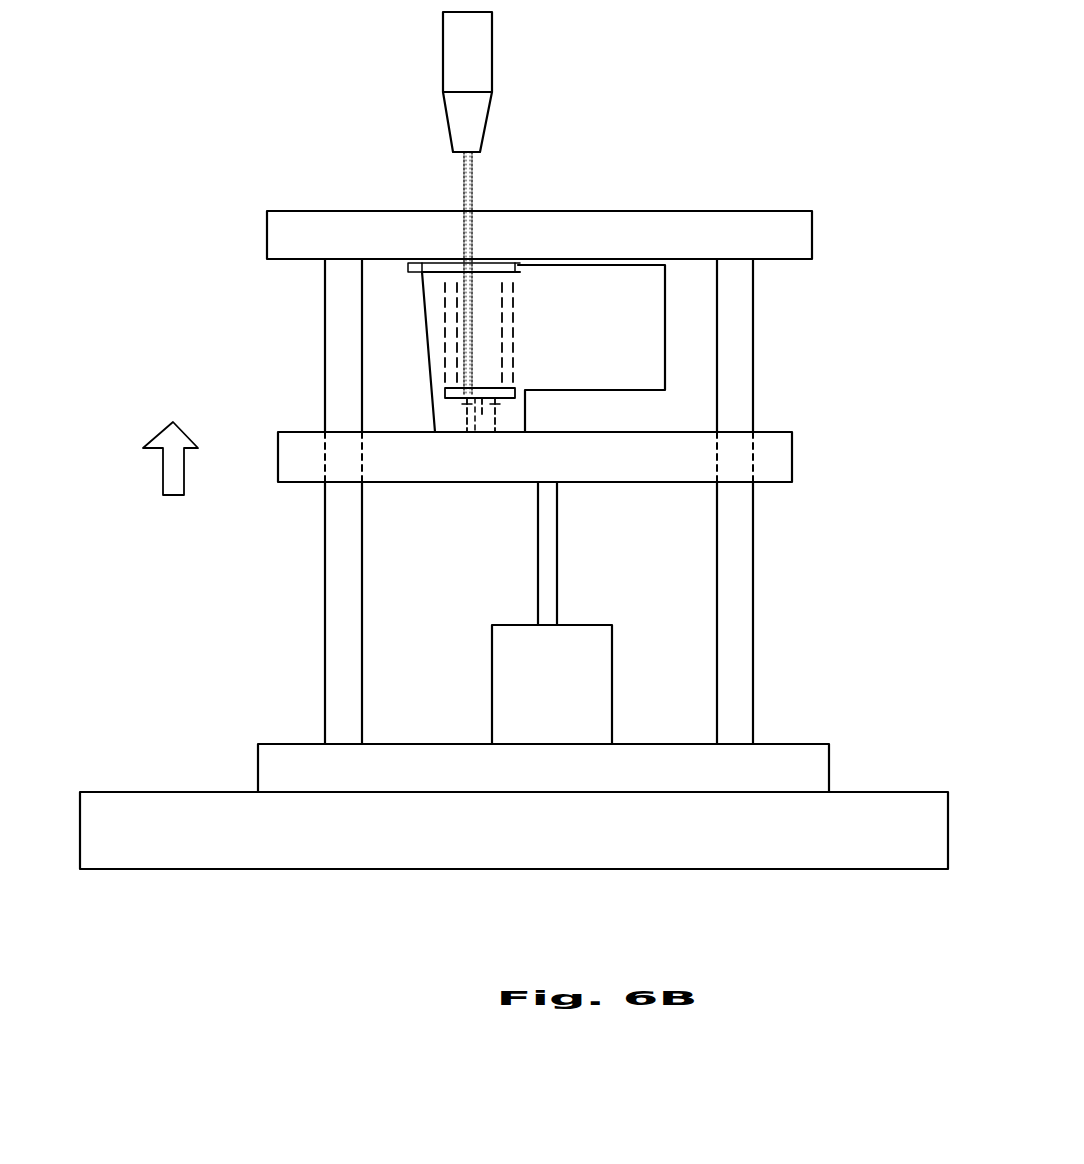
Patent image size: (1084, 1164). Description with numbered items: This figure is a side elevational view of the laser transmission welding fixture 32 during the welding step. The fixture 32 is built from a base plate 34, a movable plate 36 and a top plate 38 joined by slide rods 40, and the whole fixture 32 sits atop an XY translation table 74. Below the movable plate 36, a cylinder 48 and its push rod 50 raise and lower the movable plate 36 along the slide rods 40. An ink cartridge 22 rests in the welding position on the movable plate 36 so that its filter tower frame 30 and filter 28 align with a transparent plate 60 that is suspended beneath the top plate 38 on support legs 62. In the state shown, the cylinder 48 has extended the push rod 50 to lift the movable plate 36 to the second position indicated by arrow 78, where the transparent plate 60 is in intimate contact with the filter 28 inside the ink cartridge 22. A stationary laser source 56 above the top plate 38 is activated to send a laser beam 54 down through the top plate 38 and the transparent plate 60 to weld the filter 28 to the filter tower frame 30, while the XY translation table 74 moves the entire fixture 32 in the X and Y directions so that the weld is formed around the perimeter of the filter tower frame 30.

The ink cartridge 22 is at (652, 402).
The filter 28 is at (497, 407).
The filter tower frame 30 is at (468, 418).
The laser transmission welding fixture 32 is at (236, 302).
The base plate 34 is at (773, 764).
The movable plate 36 is at (772, 460).
The top plate 38 is at (778, 233).
The slide rods 40 is at (725, 420).
The cylinder 48 is at (539, 698).
The push rod 50 is at (548, 591).
The laser beam 54 is at (476, 184).
The laser source 56 is at (465, 67).
The transparent plate 60 is at (515, 386).
The support legs 62 is at (508, 295).
The XY translation table 74 is at (543, 842).
The arrow 78 is at (163, 466).